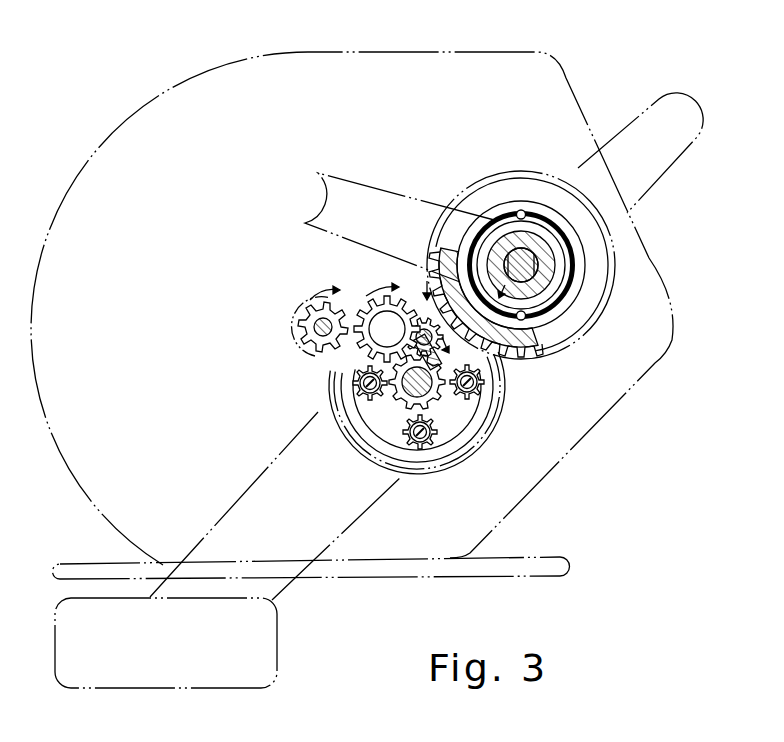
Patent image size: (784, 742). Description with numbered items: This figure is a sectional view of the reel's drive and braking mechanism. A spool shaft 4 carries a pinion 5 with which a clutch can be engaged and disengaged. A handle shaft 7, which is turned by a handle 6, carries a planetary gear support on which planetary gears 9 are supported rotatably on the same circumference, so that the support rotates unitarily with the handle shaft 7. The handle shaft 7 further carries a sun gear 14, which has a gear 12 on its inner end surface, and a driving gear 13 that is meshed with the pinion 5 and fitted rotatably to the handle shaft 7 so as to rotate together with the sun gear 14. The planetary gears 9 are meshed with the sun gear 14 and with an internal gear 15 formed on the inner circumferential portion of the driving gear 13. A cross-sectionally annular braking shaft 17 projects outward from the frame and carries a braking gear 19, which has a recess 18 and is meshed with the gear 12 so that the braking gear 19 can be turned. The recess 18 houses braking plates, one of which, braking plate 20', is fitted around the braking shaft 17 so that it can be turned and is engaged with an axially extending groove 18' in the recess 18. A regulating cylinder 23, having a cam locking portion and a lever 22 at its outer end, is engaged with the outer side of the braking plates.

The spool shaft 4 is at (317, 320).
The pinion 5 is at (313, 349).
The handle 6 is at (278, 637).
The handle shaft 7 is at (432, 395).
The planetary gear 9 is at (420, 297).
The gear 12 is at (510, 364).
The driving gear 13 is at (338, 365).
The sun gear 14 is at (437, 408).
The internal gear 15 is at (376, 311).
The braking shaft 17 is at (539, 265).
The recess 18 is at (564, 269).
The axially extending groove 18' is at (521, 220).
The braking gear 19 is at (531, 355).
The braking plate 20' is at (630, 167).
The lever 22 is at (357, 176).
The regulating cylinder 23 is at (560, 296).